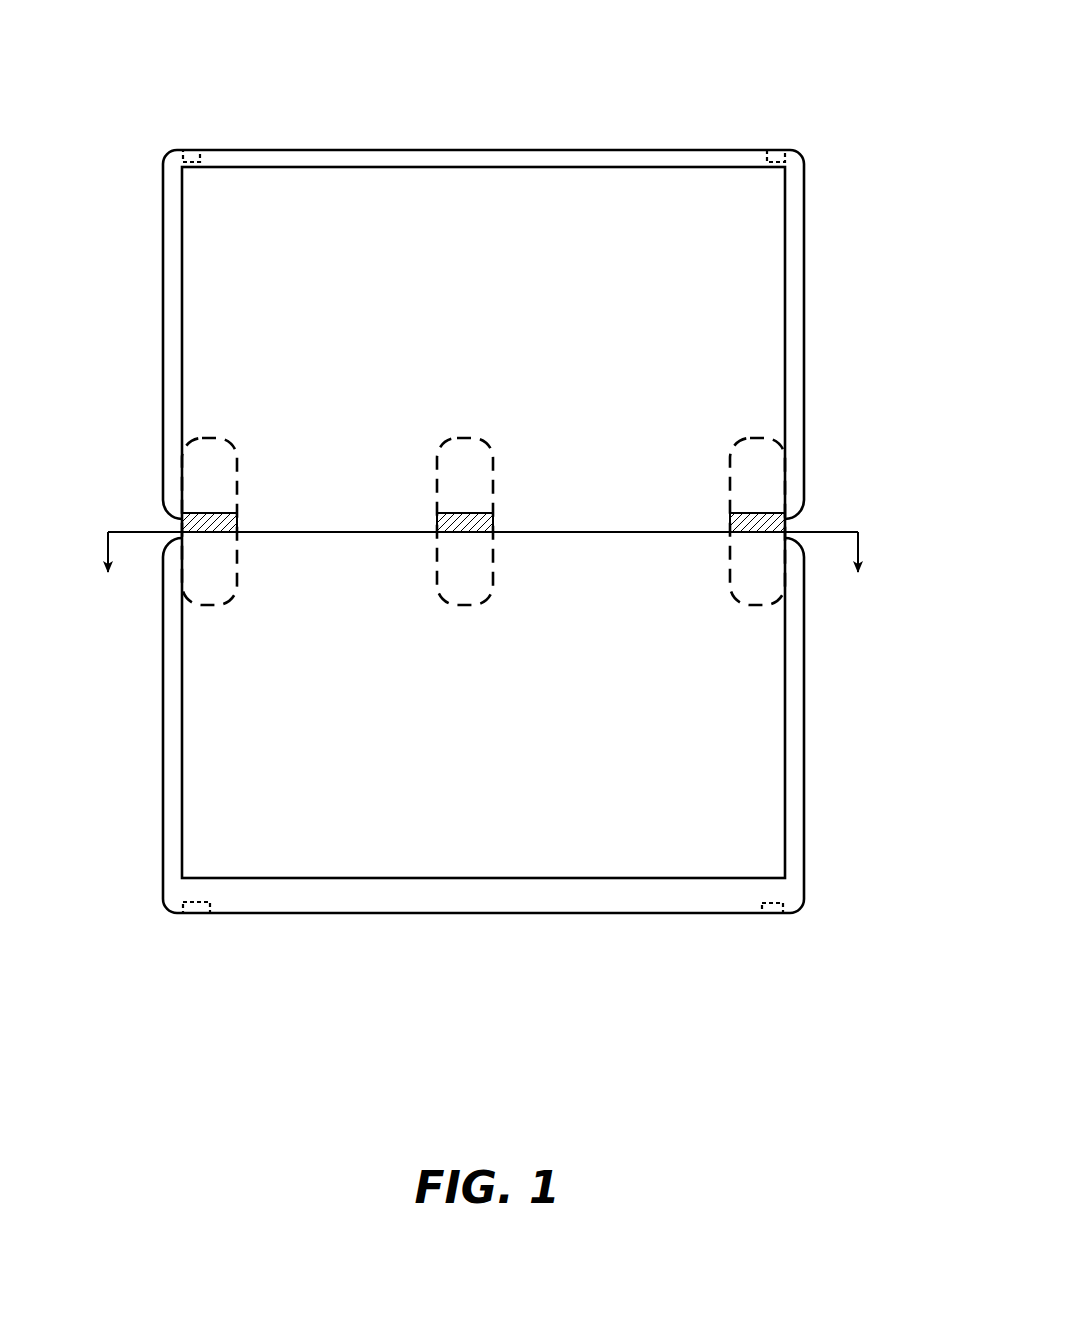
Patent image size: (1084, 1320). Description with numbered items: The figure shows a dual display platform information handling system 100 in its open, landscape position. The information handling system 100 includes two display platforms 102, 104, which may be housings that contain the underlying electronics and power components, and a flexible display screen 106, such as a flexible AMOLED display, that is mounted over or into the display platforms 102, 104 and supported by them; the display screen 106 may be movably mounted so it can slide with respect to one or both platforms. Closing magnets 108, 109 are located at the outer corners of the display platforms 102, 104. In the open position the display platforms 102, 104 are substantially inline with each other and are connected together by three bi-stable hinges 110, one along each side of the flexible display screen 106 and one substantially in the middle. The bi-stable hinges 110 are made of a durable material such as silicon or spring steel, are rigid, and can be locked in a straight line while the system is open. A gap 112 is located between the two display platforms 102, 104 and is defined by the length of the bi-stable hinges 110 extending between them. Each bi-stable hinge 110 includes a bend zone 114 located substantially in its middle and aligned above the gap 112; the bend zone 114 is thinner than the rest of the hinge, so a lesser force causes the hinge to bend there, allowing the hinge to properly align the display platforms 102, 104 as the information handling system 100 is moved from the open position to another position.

The information handling system 100 is at (759, 50).
The display platform 102 is at (808, 291).
The display platform 104 is at (809, 800).
The flexible display screen 106 is at (245, 199).
The closing magnet 108 is at (193, 150).
The closing magnet 109 is at (197, 914).
The bi-stable hinge 110 is at (196, 438).
The gap 112 is at (808, 523).
The bend zone 114 is at (182, 521).